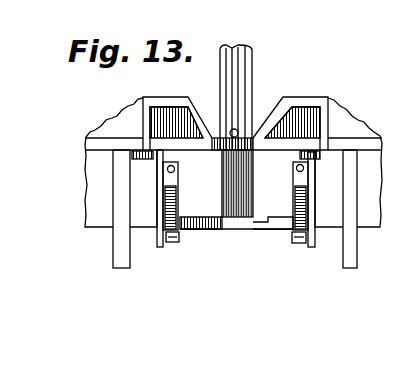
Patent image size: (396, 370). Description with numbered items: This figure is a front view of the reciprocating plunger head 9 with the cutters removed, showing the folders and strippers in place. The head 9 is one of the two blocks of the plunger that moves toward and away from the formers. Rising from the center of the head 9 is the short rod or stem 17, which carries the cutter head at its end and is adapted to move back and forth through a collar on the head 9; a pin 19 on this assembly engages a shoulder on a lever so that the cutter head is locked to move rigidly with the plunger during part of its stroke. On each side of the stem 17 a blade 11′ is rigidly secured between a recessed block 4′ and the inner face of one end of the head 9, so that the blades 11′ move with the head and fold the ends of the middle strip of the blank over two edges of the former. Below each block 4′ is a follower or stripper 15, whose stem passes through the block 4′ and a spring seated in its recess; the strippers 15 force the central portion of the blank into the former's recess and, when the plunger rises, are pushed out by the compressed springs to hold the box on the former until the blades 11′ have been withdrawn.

The head 9 is at (224, 183).
The rod or stem 17 is at (254, 90).
The pin 19 is at (251, 112).
The recessed block 4′ is at (179, 185).
The follower or stripper 15 is at (179, 242).
The blade 11′ is at (160, 249).